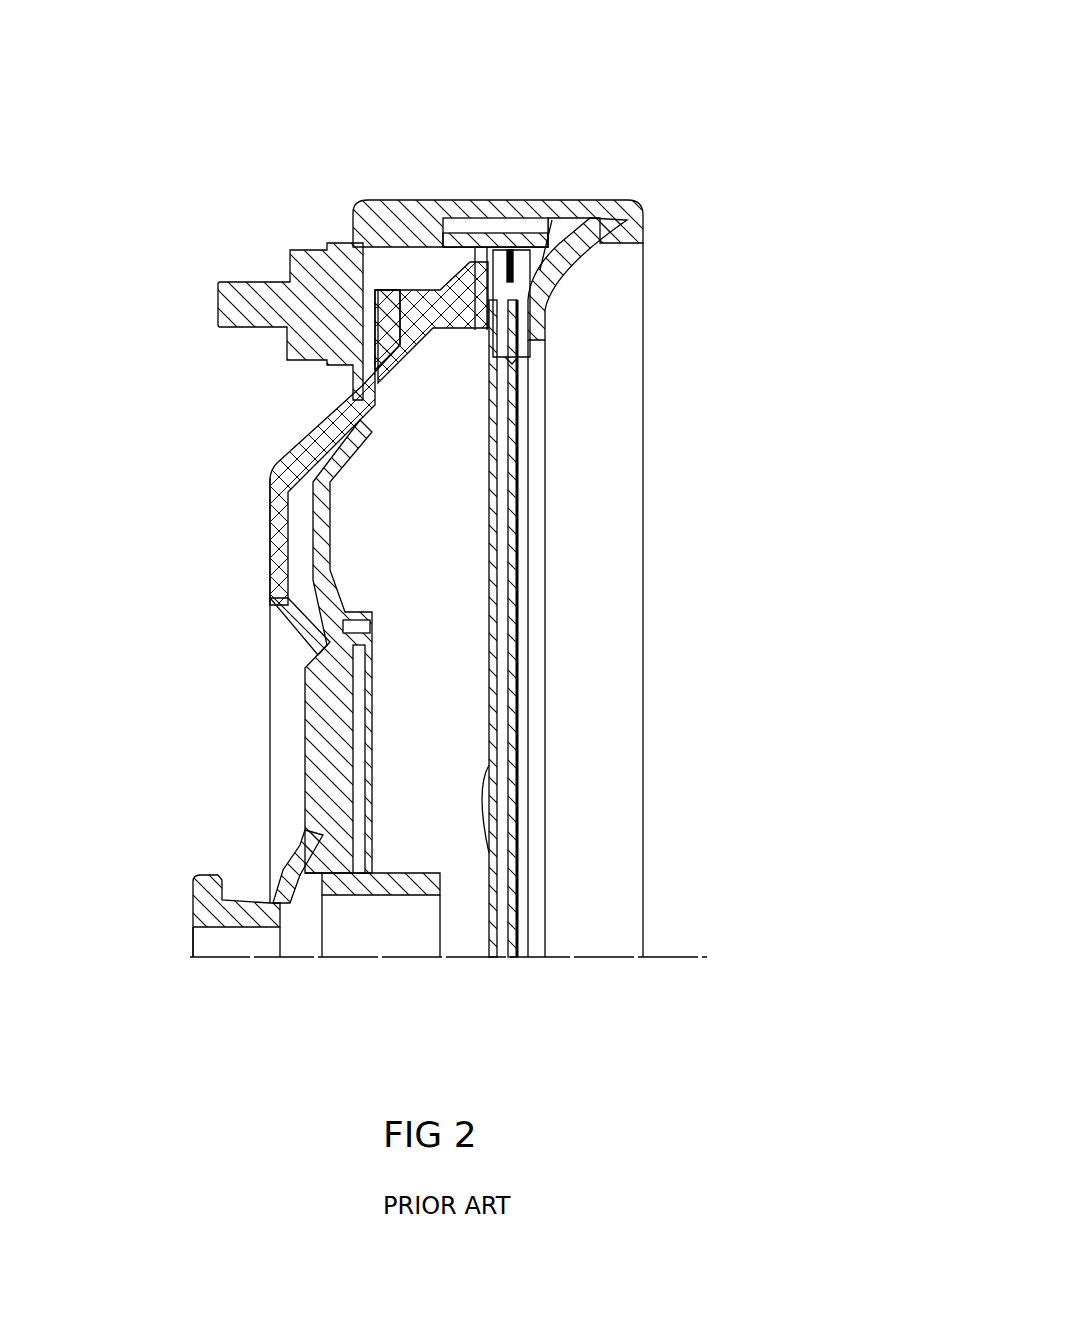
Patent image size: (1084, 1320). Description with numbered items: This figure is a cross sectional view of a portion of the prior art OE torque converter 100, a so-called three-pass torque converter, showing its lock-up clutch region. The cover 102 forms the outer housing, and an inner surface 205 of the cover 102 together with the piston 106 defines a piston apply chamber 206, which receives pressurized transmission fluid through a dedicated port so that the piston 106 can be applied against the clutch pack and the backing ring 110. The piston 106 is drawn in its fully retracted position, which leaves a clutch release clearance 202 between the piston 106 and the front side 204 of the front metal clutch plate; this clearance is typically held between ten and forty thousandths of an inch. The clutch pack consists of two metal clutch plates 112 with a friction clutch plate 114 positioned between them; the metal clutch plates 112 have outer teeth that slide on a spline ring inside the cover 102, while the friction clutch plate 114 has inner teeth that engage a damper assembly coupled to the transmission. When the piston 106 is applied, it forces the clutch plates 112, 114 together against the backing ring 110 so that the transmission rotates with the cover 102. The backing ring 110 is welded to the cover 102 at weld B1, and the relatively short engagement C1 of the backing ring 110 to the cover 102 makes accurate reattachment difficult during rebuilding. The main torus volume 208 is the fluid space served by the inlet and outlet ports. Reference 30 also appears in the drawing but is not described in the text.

The torque converter 100 is at (778, 87).
The cover 102 is at (362, 202).
The metal clutch plates 112 is at (463, 213).
The backing ring 110 is at (570, 258).
The friction clutch plate 114 is at (535, 340).
The front side 204 is at (493, 622).
The clutch release clearance 202 is at (540, 484).
The seal 30 is at (345, 372).
The inner surface 205 is at (318, 437).
The piston 106 is at (280, 480).
The piston apply chamber 206 is at (298, 528).
The main torus volume 208 is at (435, 578).
The engagement C1 is at (552, 113).
The weld B1 is at (637, 205).